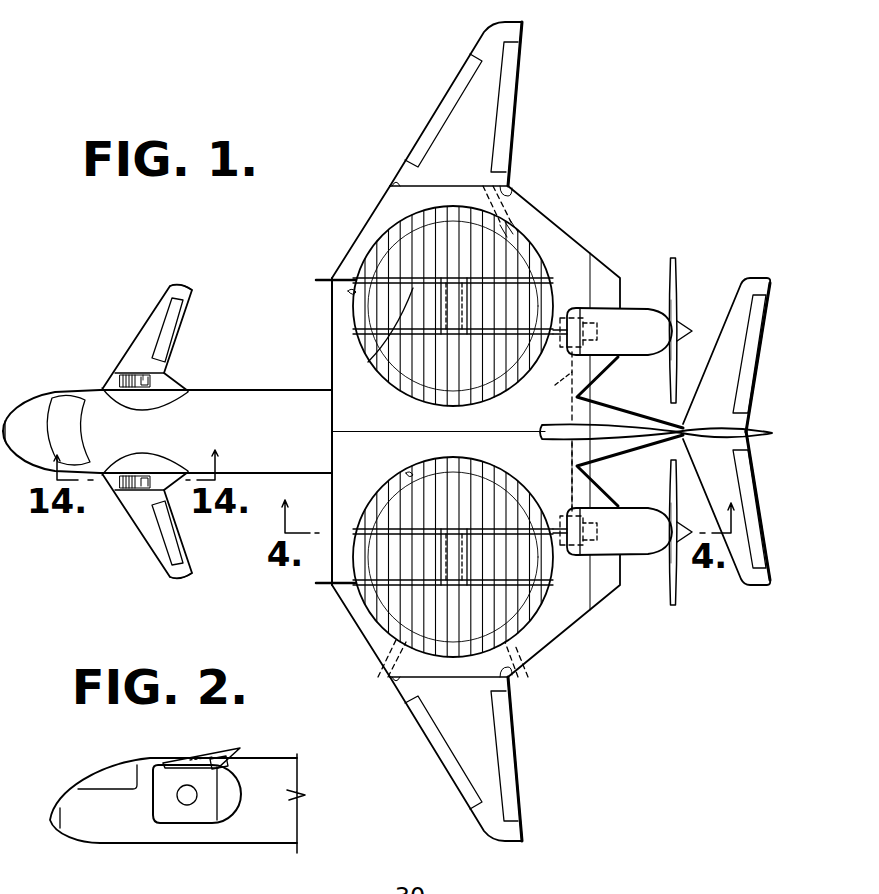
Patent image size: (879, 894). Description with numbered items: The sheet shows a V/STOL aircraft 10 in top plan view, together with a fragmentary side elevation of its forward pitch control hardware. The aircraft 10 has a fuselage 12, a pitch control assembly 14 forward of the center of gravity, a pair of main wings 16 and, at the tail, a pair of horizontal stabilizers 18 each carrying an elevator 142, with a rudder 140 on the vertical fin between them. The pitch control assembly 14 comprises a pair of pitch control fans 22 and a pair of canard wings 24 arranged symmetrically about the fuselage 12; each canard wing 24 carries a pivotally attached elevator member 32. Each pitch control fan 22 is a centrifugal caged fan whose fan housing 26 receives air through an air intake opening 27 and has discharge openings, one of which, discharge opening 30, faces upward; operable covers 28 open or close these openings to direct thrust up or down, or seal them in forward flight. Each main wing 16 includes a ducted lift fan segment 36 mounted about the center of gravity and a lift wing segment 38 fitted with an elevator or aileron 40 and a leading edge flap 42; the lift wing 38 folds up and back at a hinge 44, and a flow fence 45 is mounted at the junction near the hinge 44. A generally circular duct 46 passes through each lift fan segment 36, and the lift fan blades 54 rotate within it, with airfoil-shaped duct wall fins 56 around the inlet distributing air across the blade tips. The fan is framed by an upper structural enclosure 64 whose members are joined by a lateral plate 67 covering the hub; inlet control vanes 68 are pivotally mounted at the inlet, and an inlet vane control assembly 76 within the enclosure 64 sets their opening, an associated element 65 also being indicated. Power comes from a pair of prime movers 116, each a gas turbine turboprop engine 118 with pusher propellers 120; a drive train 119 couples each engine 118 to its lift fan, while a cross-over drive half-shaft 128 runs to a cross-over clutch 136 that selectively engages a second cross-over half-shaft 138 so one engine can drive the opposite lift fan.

In FIG. 1, the V/STOL aircraft 10 is at (613, 173).
In FIG. 1, the fuselage 12 is at (295, 392).
In FIG. 2, the fuselage 12 is at (255, 840).
In FIG. 1, the pitch control assembly 14 is at (158, 308).
In FIG. 1, the main wings 16 is at (372, 215).
In FIG. 1, the stabilizers 18 is at (742, 300).
In FIG. 1, the pitch control fans 22 is at (152, 385).
In FIG. 2, the pitch control fans 22 is at (145, 768).
In FIG. 1, the canard wings 24 is at (182, 285).
In FIG. 2, the canard wings 24 is at (196, 759).
In FIG. 2, the fan housing 26 is at (153, 802).
In FIG. 2, the air intake opening 27 is at (182, 805).
In FIG. 1, the covers 28 is at (120, 379).
In FIG. 1, the discharge opening 30 is at (145, 374).
In FIG. 1, the elevator member 32 is at (168, 350).
In FIG. 2, the elevator member 32 is at (230, 767).
In FIG. 1, the ducted lift fan segment 36 is at (576, 238).
In FIG. 1, the lift wing segments 38 is at (487, 36).
In FIG. 1, the elevator (aileron) 40 is at (513, 92).
In FIG. 1, the leading edge flap 42 is at (448, 104).
In FIG. 1, the hinge 44 is at (393, 180).
In FIG. 1, the flow fence 45 is at (514, 186).
In FIG. 1, the circular duct 46 is at (347, 292).
In FIG. 1, the fan blades 54 is at (530, 660).
In FIG. 1, the duct wall fins 56 is at (490, 185).
In FIG. 1, the upper structural enclosure 64 is at (372, 280).
In FIG. 1, the fan inlet guide 65 is at (368, 362).
In FIG. 1, the lateral plate 67 is at (457, 306).
In FIG. 1, the inlet control vanes 68 is at (506, 240).
In FIG. 1, the inlet vane control assembly 76 is at (541, 280).
In FIG. 1, the prime movers 116 is at (672, 258).
In FIG. 1, the gas turbine turboprop engine 118 is at (647, 308).
In FIG. 1, the drive train 119 is at (598, 331).
In FIG. 1, the pusher propellers 120 is at (677, 270).
In FIG. 1, the cross-over drive half-shaft 128 is at (572, 455).
In FIG. 1, the cross-over clutch 136 is at (572, 421).
In FIG. 1, the second cross-over half-shaft 138 is at (550, 384).
In FIG. 1, the rudder 140 is at (752, 440).
In FIG. 1, the elevator 142 is at (746, 403).